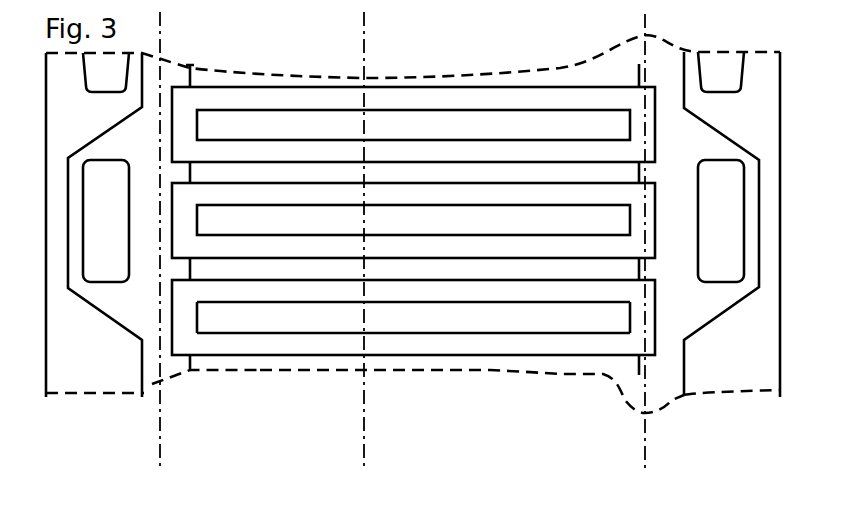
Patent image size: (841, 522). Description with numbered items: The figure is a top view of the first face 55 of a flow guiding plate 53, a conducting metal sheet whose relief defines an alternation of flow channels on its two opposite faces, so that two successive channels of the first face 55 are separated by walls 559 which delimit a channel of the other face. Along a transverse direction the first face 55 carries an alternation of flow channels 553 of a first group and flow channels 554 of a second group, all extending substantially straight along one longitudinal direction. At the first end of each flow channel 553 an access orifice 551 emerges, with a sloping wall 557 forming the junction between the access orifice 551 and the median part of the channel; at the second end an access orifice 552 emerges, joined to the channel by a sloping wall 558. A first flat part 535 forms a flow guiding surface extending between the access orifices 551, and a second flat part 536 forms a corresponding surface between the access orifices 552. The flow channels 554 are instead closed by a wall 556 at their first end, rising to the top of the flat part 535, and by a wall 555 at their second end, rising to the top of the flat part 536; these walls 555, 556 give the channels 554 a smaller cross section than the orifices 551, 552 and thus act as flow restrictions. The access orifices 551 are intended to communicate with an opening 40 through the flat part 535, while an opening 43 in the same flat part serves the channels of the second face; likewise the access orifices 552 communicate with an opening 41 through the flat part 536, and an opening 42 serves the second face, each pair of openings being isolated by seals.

The opening 40 is at (94, 228).
The opening 41 is at (709, 228).
The opening 42 is at (709, 84).
The opening 43 is at (94, 84).
The flow guiding plate 53 is at (578, 430).
The first face 55 is at (267, 358).
The first flat part 535 is at (150, 367).
The second flat part 536 is at (668, 393).
The access orifice 551 is at (178, 177).
The access orifice 552 is at (650, 173).
The flow channel of the first group 553 is at (301, 273).
The flow channel of the second group 554 is at (390, 316).
The wall 555 is at (630, 317).
The wall 556 is at (196, 317).
The sloping wall 557 is at (193, 172).
The sloping wall 558 is at (637, 274).
The wall 559 is at (523, 357).